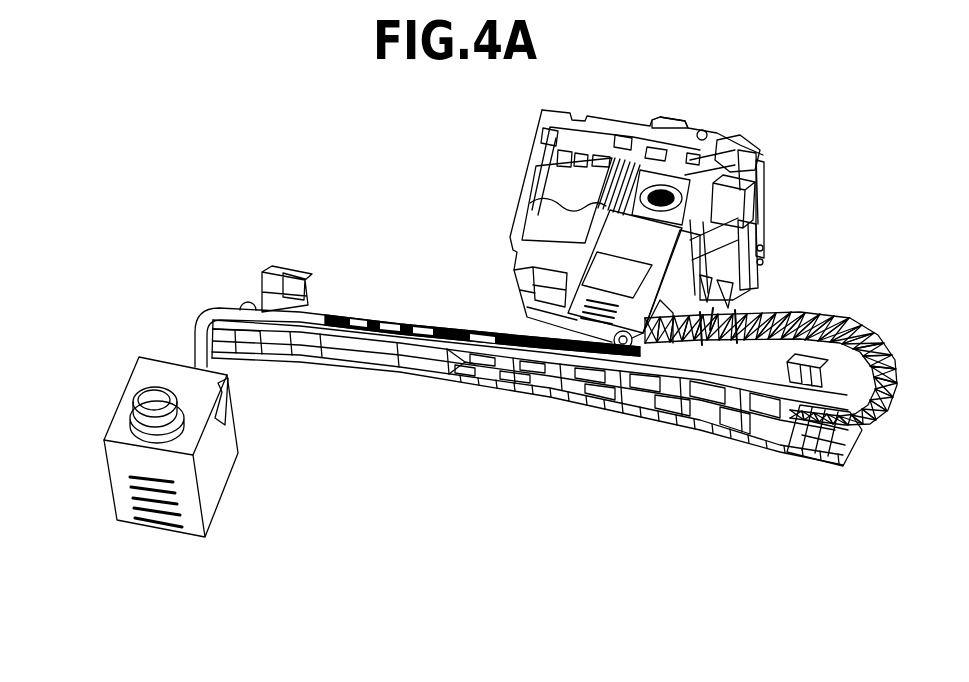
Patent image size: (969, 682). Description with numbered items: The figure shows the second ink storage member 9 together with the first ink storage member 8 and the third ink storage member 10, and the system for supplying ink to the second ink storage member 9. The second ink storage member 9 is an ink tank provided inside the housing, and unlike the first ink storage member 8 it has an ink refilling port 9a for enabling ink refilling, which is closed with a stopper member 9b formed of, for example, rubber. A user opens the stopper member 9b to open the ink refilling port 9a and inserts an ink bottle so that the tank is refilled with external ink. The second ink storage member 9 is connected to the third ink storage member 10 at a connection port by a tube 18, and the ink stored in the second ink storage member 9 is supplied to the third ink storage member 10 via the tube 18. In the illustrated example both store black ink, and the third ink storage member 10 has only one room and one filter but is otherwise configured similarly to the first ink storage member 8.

The first ink storage member 8 is at (651, 229).
The third ink storage member 10 is at (757, 245).
The tube 18 is at (195, 352).
The second ink storage member 9 is at (135, 436).
The ink refilling port 9a is at (130, 418).
The stopper member 9b is at (135, 407).